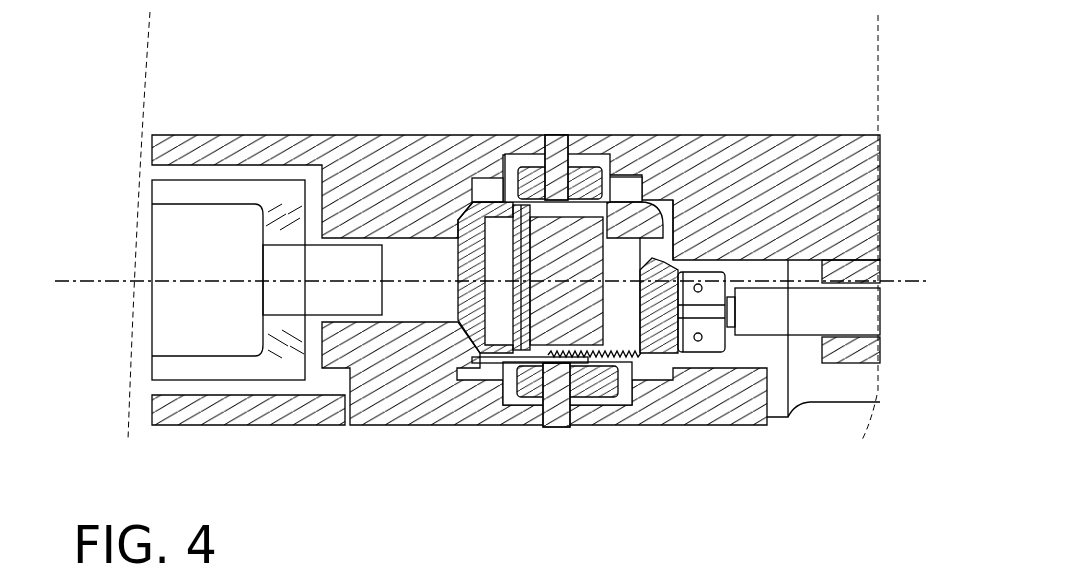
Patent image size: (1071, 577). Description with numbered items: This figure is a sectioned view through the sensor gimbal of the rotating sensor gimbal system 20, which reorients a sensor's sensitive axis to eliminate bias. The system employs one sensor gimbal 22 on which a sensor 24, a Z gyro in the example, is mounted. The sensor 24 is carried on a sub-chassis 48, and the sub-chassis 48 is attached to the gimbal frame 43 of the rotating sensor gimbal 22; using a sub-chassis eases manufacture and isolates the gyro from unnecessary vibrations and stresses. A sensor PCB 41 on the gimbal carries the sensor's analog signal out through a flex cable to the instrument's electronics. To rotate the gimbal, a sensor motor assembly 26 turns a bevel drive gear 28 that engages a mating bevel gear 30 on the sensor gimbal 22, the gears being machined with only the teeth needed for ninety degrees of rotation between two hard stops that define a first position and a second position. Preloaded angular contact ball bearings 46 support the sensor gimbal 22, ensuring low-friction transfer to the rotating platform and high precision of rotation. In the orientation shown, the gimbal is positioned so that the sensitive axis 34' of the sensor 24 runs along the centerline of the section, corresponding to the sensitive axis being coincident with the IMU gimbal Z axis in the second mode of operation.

The sensor gimbal system 20 is at (695, 68).
The sensor gimbal 22 is at (558, 133).
The sensor 24 is at (580, 250).
The sensor motor assembly 26 is at (805, 313).
The bevel drive gear 28 is at (652, 338).
The mating bevel gear 30 is at (595, 357).
The sensitive axis 34' is at (473, 255).
The sensor PCB 41 is at (523, 292).
The gimbal frame 43 is at (512, 191).
The preloaded angular contact ball bearings 46 is at (586, 177).
The sub-chassis 48 is at (497, 290).